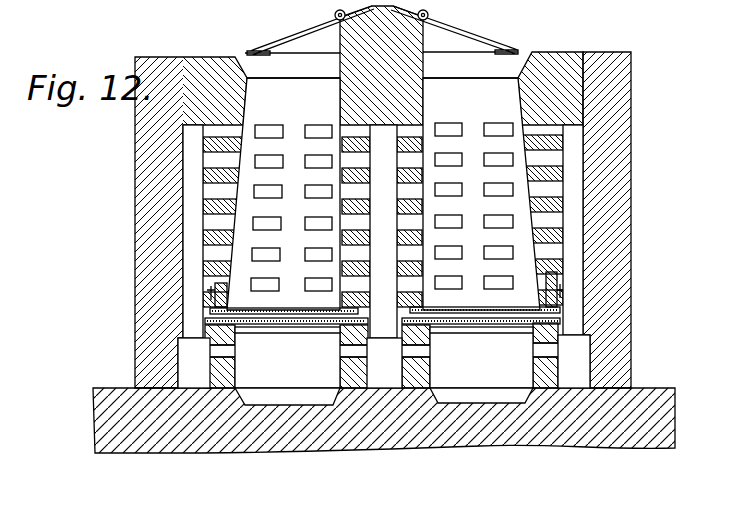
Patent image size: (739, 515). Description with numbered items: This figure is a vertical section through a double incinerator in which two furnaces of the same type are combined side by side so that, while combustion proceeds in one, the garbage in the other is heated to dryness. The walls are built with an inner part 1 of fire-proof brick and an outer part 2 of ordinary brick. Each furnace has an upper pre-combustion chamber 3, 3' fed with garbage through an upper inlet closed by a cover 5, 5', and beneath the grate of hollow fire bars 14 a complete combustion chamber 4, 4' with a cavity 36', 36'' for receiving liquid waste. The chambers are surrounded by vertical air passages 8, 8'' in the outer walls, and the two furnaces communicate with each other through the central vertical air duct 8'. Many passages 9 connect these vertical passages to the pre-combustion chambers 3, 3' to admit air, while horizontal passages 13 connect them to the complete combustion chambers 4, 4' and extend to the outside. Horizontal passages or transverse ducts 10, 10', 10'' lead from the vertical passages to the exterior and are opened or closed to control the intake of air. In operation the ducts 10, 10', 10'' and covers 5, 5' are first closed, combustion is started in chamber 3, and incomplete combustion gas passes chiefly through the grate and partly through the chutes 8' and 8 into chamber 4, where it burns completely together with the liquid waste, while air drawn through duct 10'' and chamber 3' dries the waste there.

The inner part 1 is at (359, 197).
The outer part 2 is at (607, 220).
The pre-combustion chamber 3 is at (283, 181).
The pre-combustion chamber 3' is at (481, 181).
The complete combustion chamber 4 is at (287, 357).
The complete combustion chamber 4' is at (481, 357).
The cover 5 is at (310, 27).
The cover 5' is at (454, 27).
The vertical air passage 8 is at (193, 231).
The vertical air duct 8' is at (383, 231).
The vertical air passage 8'' is at (575, 230).
The passage 9 is at (383, 213).
The horizontal passage 10 is at (194, 363).
The transverse duct 10' is at (384, 363).
The transverse duct 10'' is at (573, 361).
The horizontal passage 13 is at (540, 348).
The hollow fire bar 14 is at (480, 307).
The cavity 36' is at (287, 397).
The cavity 36'' is at (481, 396).